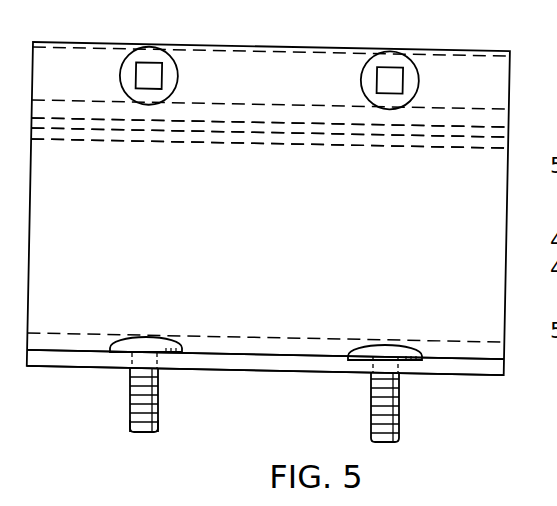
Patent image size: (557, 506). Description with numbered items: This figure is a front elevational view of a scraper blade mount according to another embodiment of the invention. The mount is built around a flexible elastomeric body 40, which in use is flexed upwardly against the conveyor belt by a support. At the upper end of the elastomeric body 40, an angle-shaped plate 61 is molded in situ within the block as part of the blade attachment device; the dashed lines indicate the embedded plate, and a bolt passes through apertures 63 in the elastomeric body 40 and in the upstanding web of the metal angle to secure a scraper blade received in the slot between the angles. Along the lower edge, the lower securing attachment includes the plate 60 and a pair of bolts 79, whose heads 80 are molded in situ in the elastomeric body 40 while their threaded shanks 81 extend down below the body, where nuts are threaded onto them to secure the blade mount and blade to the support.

The elastomeric body 40 is at (482, 220).
The plate 60 is at (237, 360).
The angle-shaped plate 61 is at (493, 137).
The apertures 63 is at (151, 78).
The bolts 79 is at (159, 401).
The heads 80 is at (147, 337).
The threaded shanks 81 is at (130, 421).